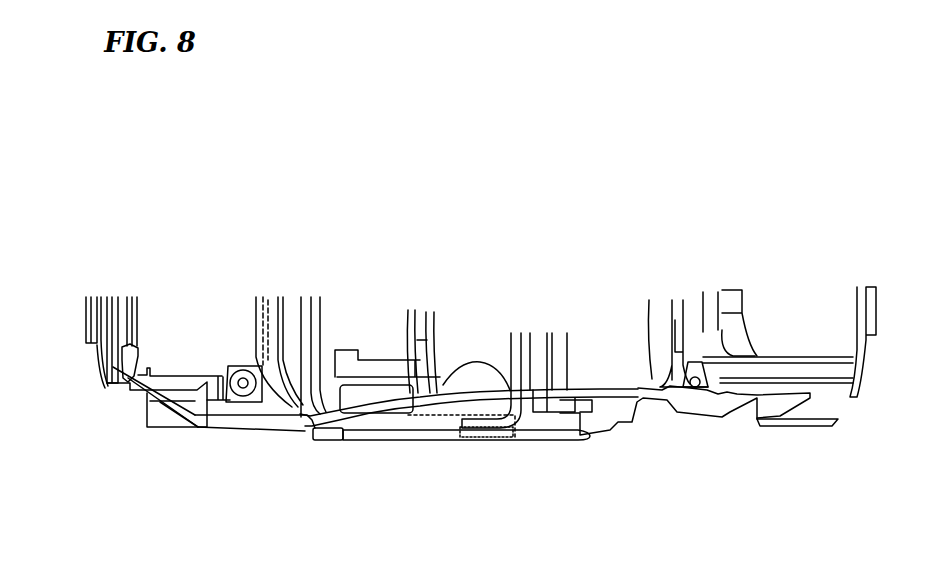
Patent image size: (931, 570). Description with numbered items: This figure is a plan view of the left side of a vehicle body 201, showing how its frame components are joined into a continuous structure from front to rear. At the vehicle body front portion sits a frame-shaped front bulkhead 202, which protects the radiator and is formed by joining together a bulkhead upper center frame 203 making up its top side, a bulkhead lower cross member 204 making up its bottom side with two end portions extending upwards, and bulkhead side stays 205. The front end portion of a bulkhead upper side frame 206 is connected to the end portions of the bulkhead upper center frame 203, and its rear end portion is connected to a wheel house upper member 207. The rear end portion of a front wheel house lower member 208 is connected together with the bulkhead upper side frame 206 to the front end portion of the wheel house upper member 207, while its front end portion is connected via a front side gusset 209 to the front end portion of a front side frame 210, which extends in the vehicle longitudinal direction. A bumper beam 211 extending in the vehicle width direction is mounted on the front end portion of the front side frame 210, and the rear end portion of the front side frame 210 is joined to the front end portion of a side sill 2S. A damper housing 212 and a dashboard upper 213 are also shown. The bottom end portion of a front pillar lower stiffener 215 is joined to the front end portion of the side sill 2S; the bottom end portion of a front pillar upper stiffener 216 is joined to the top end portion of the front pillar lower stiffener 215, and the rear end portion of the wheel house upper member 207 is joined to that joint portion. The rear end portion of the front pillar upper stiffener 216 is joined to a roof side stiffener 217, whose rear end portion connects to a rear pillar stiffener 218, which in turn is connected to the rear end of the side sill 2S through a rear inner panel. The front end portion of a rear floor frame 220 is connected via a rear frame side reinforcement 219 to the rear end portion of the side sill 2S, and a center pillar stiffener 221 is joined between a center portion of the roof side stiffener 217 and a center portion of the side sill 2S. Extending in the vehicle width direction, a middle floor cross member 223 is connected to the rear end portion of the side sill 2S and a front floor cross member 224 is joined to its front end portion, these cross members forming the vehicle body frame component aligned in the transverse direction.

The vehicle body 201 is at (547, 239).
The front bulkhead 202 is at (142, 298).
The bulkhead upper center frame 203 is at (122, 312).
The bulkhead lower cross member 204 is at (128, 330).
The bulkhead side stay 205 is at (140, 367).
The bulkhead upper side frame 206 is at (177, 415).
The wheel house upper member 207 is at (258, 427).
The front wheel house lower member 208 is at (180, 427).
The front side gusset 209 is at (150, 410).
The front side frame 210 is at (187, 383).
The bumper beam 211 is at (98, 355).
The damper housing 212 is at (260, 363).
The dashboard upper 213 is at (287, 300).
The front pillar lower stiffener 215 is at (328, 443).
The front pillar upper stiffener 216 is at (373, 413).
The roof side stiffener 217 is at (563, 387).
The rear pillar stiffener 218 is at (753, 408).
The rear frame side reinforcement 219 is at (615, 413).
The rear floor frame 220 is at (797, 373).
The center pillar stiffener 221 is at (513, 402).
The middle floor cross member 223 is at (540, 350).
The front floor cross member 224 is at (428, 412).
The side sill 2S is at (453, 445).